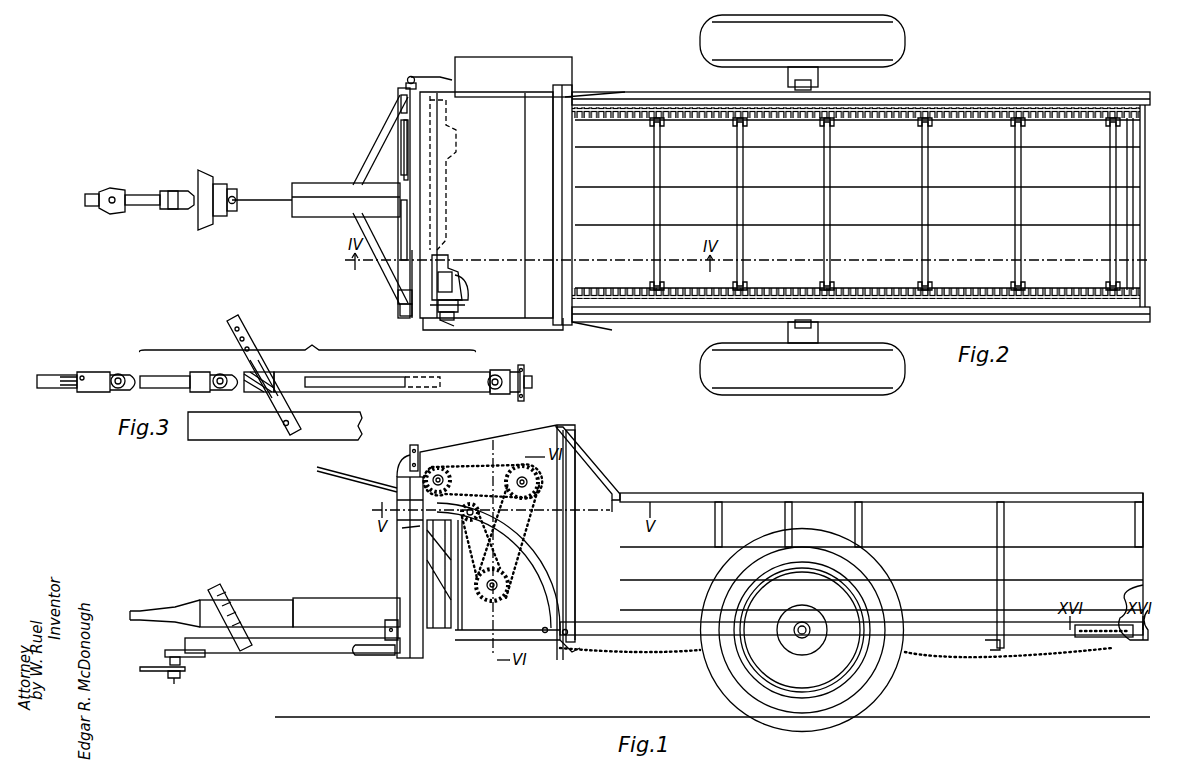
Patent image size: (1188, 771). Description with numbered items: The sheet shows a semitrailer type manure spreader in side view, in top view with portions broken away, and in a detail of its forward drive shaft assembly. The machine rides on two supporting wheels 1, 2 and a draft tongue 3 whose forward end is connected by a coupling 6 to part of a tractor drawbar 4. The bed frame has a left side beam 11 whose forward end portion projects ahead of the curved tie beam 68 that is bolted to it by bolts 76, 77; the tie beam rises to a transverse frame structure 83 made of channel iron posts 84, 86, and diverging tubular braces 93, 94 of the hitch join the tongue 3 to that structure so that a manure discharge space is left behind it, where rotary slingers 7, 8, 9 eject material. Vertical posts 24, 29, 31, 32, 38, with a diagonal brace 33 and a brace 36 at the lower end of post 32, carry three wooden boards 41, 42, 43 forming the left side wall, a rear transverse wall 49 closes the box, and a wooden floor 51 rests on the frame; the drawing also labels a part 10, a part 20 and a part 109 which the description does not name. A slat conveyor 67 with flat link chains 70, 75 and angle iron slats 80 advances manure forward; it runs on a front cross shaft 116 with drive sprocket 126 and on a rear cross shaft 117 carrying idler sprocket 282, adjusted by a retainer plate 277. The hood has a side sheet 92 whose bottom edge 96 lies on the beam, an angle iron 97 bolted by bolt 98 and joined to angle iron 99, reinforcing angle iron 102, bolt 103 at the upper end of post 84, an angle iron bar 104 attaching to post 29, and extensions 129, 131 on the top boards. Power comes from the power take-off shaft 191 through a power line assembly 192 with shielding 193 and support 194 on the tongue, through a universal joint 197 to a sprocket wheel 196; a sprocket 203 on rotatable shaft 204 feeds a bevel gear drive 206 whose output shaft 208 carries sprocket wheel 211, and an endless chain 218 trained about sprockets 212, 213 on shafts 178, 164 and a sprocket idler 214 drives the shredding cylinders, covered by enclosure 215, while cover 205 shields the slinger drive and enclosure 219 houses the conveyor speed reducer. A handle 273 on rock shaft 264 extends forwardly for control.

In FIG. 2, the supporting wheel 1 is at (905, 378).
In FIG. 2, the supporting wheel 2 is at (905, 42).
In FIG. 3, the draft tongue 3 is at (261, 440).
In FIG. 1, the draft tongue 3 is at (303, 653).
In FIG. 1, the tractor drawbar 4 is at (155, 672).
In FIG. 1, the coupling 6 is at (190, 660).
In FIG. 2, the rotary slinger 7 is at (440, 250).
In FIG. 1, the rotary slinger 7 is at (444, 592).
In FIG. 2, the rotary slinger 8 is at (440, 160).
In FIG. 1, the rotary slinger 9 is at (437, 644).
In FIG. 2, the wagon box 10 is at (1072, 320).
In FIG. 1, the wagon box 10 is at (950, 527).
In FIG. 1, the side beam 11 is at (686, 636).
In FIG. 2, the conveyor chain 20 is at (976, 82).
In FIG. 1, the angle iron post 24 is at (722, 524).
In FIG. 1, the angle iron post 29 is at (576, 562).
In FIG. 1, the angle iron post 31 is at (862, 528).
In FIG. 1, the angle iron post 32 is at (1004, 528).
In FIG. 1, the diagonal brace 33 is at (574, 648).
In FIG. 1, the diagonal brace 36 is at (986, 644).
In FIG. 1, the vertical post 38 is at (792, 524).
In FIG. 1, the wooden board 41 is at (1110, 590).
In FIG. 1, the wooden board 42 is at (1083, 556).
In FIG. 1, the wooden board 43 is at (1070, 512).
In FIG. 2, the rear transverse wall 49 is at (1143, 243).
In FIG. 2, the wooden floor 51 is at (1068, 130).
In FIG. 1, the slat conveyor 67 is at (628, 655).
In FIG. 1, the tie beam 68 is at (530, 560).
In FIG. 2, the flat link chain 70 is at (785, 292).
In FIG. 2, the flat link chain 75 is at (779, 120).
In FIG. 1, the bolt 76 is at (522, 625).
In FIG. 1, the bolt 77 is at (568, 625).
In FIG. 2, the angle iron slat 80 is at (828, 205).
In FIG. 1, the transverse frame structure 83 is at (400, 580).
In FIG. 2, the channel iron post 84 is at (412, 318).
In FIG. 1, the channel iron post 84 is at (405, 552).
In FIG. 2, the channel iron post 86 is at (408, 80).
In FIG. 1, the side sheet 92 is at (483, 445).
In FIG. 2, the tubular brace 93 is at (336, 187).
In FIG. 1, the tubular brace 93 is at (368, 656).
In FIG. 2, the tubular brace 94 is at (385, 140).
In FIG. 1, the bottom edge 96 is at (469, 610).
In FIG. 1, the angle iron 97 is at (469, 575).
In FIG. 1, the bolt 98 is at (480, 628).
In FIG. 1, the angle iron 99 is at (462, 511).
In FIG. 1, the angle iron 102 is at (402, 528).
In FIG. 1, the bolt 103 is at (408, 470).
In FIG. 1, the angle iron bar 104 is at (560, 530).
In FIG. 2, the gear case 109 is at (465, 294).
In FIG. 1, the front cross shaft 116 is at (548, 640).
In FIG. 1, the rear cross shaft 117 is at (1135, 640).
In FIG. 1, the drive sprocket 126 is at (527, 650).
In FIG. 2, the extension 129 is at (611, 92).
In FIG. 2, the extension 131 is at (618, 320).
In FIG. 1, the extension 131 is at (600, 483).
In FIG. 1, the shaft 164 is at (522, 593).
In FIG. 1, the shaft 178 is at (536, 479).
In FIG. 3, the power take-off shaft 191 is at (52, 388).
In FIG. 2, the power line assembly 192 is at (149, 191).
In FIG. 3, the power line assembly 192 is at (328, 345).
In FIG. 2, the protective shielding 193 is at (333, 183).
In FIG. 1, the protective shielding 193 is at (333, 600).
In FIG. 2, the support 194 is at (218, 186).
In FIG. 3, the support 194 is at (242, 326).
In FIG. 1, the support 194 is at (219, 592).
In FIG. 3, the sprocket wheel 196 is at (524, 370).
In FIG. 3, the universal joint 197 is at (495, 375).
In FIG. 2, the sprocket 203 is at (402, 316).
In FIG. 2, the rotatable shaft 204 is at (398, 300).
In FIG. 2, the sheet metal cover 205 is at (398, 108).
In FIG. 2, the bevel gear drive 206 is at (504, 277).
In FIG. 2, the output shaft 208 is at (447, 322).
In FIG. 1, the output shaft 208 is at (439, 467).
In FIG. 2, the sprocket wheel 211 is at (458, 312).
In FIG. 1, the sprocket wheel 211 is at (483, 481).
In FIG. 1, the sprocket wheel 212 is at (520, 470).
In FIG. 1, the sprocket wheel 213 is at (498, 579).
In FIG. 1, the sprocket idler 214 is at (479, 501).
In FIG. 2, the sheet metal enclosure 215 is at (563, 330).
In FIG. 1, the endless chain 218 is at (523, 542).
In FIG. 2, the sheet metal enclosure 219 is at (511, 66).
In FIG. 2, the rock shaft 264 is at (404, 176).
In FIG. 2, the handle 273 is at (277, 209).
In FIG. 1, the handle 273 is at (362, 480).
In FIG. 1, the retainer plate 277 is at (1100, 625).
In FIG. 1, the idler sprocket 282 is at (1110, 652).